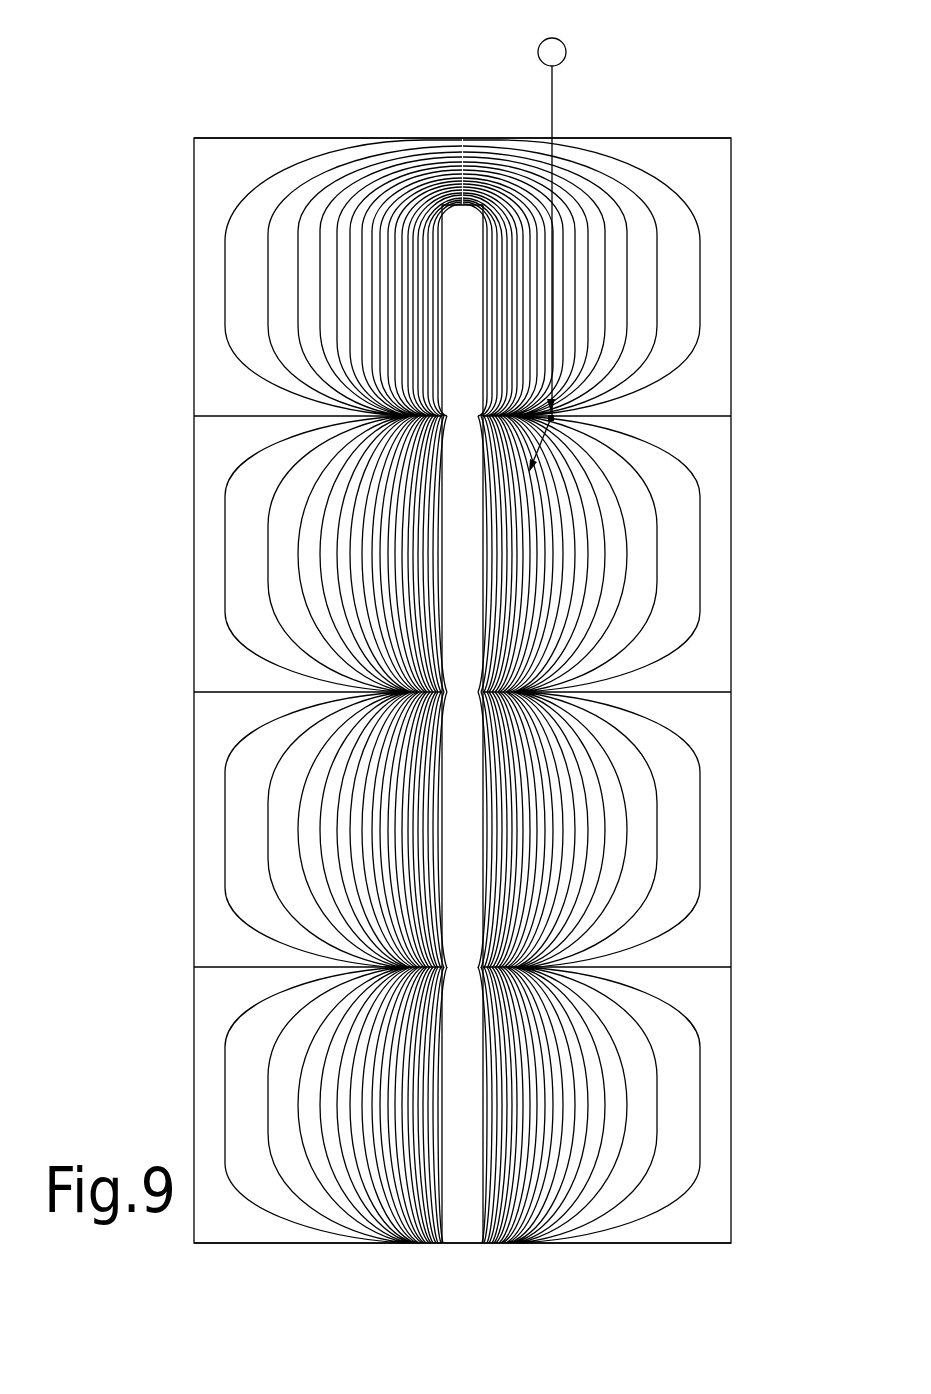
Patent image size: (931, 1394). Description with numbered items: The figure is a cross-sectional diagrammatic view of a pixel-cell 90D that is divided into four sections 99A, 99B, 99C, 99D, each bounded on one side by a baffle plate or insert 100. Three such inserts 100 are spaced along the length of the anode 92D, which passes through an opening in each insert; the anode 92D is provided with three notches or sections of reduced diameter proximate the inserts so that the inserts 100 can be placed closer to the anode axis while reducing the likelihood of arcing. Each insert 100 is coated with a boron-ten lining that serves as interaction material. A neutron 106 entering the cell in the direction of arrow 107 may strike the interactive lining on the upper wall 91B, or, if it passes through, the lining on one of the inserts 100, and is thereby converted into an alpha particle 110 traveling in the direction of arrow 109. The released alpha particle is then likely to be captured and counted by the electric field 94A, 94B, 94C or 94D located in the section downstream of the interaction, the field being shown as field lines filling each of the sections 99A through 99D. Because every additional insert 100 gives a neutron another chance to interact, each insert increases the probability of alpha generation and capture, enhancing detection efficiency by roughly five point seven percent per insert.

The pixel-cell 90D is at (726, 128).
The upper wall 91B is at (258, 136).
The anode 92D is at (468, 1237).
The electric field 94A is at (715, 262).
The electric field 94B is at (712, 558).
The electric field 94C is at (712, 838).
The electric field 94D is at (713, 1112).
The upper section 99A is at (208, 275).
The cell section 99B is at (202, 553).
The cell section 99C is at (203, 828).
The cell section 99D is at (207, 1088).
The insert 100 is at (690, 417).
The neutron 106 is at (567, 48).
The arrow 107 is at (552, 90).
The arrow 109 is at (575, 487).
The alpha particle 110 is at (600, 385).